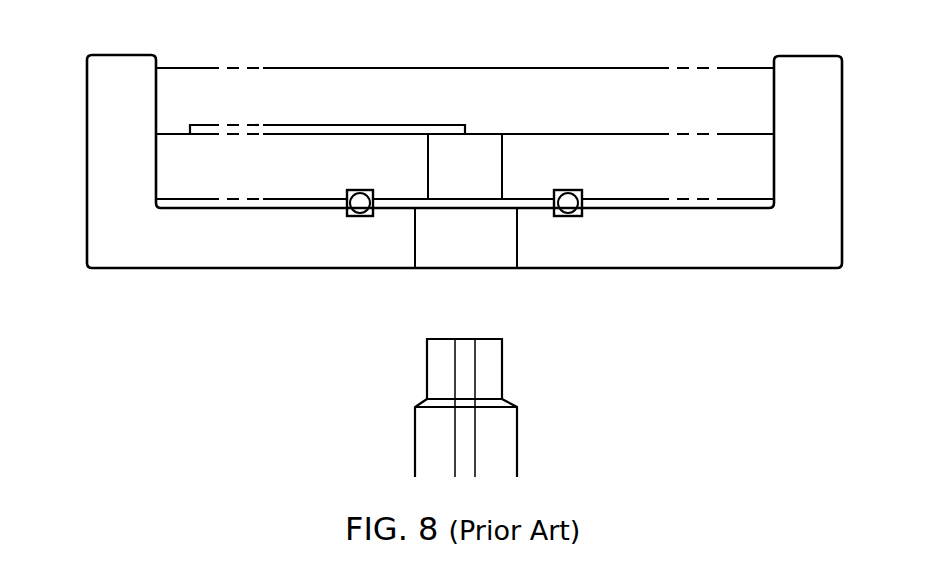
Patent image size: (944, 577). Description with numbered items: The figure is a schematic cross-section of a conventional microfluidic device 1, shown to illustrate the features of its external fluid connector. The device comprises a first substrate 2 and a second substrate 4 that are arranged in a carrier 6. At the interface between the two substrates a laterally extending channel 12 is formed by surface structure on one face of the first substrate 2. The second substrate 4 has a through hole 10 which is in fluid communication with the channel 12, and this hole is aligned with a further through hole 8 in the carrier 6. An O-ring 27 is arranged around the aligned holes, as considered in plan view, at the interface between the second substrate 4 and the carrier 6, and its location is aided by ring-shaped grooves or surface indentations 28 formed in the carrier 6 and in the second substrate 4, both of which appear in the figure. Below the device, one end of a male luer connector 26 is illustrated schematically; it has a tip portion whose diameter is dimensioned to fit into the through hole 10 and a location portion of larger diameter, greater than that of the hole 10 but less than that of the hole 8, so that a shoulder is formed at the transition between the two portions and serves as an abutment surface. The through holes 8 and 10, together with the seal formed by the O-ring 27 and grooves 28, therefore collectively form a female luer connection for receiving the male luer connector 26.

The prior art linear guide assembly 1 is at (130, 315).
The first substrate 2 is at (572, 97).
The second substrate 4 is at (732, 162).
The carrier 6 is at (108, 162).
The through hole 8 is at (466, 238).
The through hole 10 is at (465, 166).
The channel 12 is at (370, 125).
The male luer connector 26 is at (413, 453).
The O-ring 27 is at (360, 205).
The ring-shaped grooves 28 is at (568, 190).